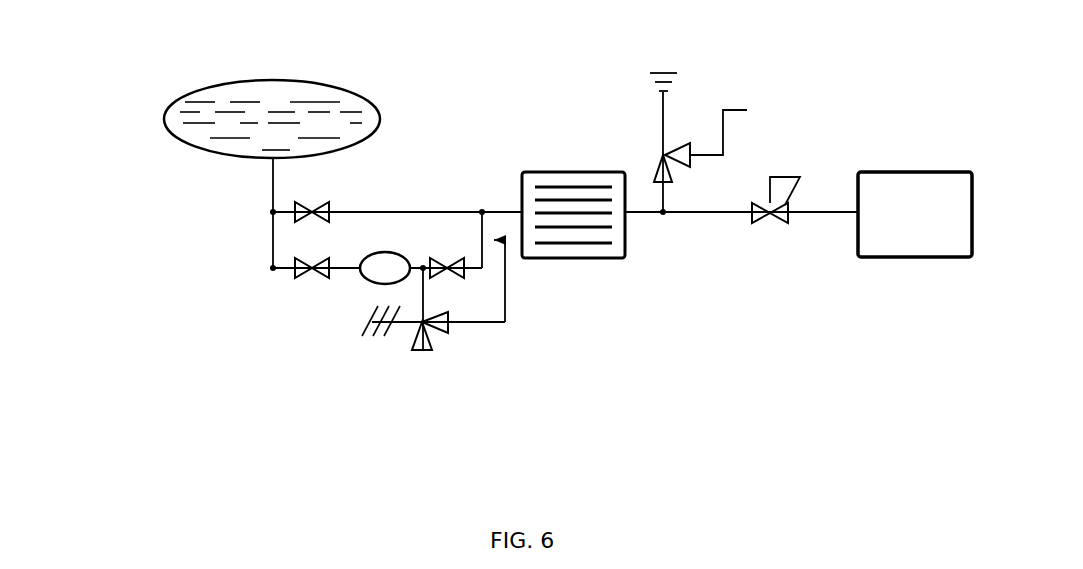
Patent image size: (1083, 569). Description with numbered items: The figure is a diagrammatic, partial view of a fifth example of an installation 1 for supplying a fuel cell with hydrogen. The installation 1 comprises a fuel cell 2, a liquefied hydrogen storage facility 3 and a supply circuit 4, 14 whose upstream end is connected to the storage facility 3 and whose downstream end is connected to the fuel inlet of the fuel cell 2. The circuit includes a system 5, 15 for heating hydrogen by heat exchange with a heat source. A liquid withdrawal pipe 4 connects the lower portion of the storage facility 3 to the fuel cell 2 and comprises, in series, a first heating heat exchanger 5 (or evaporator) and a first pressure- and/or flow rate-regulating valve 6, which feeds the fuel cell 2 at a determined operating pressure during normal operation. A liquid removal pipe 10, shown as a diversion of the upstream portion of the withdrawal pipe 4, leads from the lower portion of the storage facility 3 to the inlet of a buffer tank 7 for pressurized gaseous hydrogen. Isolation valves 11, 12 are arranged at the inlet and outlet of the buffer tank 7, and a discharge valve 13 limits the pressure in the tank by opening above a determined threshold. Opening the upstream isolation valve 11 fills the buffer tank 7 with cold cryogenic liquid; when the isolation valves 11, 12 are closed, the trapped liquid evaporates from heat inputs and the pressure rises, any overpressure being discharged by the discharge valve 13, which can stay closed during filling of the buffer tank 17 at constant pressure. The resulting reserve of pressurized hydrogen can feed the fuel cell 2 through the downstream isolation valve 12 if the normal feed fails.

The installation 1 is at (156, 210).
The fuel cell 2 is at (895, 203).
The liquefied hydrogen storage facility 3 is at (283, 102).
The liquid withdrawal pipe 4 is at (703, 214).
The first heating heat exchanger 5 is at (575, 190).
The first pressure- and/or flow rate-regulating valve 6 is at (779, 228).
The buffer tank 7 is at (378, 268).
The liquid removal pipe 10 is at (268, 272).
The upstream isolation valve 11 is at (314, 282).
The downstream isolation valve 12 is at (459, 285).
The discharge valve 13 is at (442, 348).
The supply circuit 14 is at (485, 210).
The system for heating hydrogen 15 is at (705, 95).
The buffer tank 17 is at (384, 235).